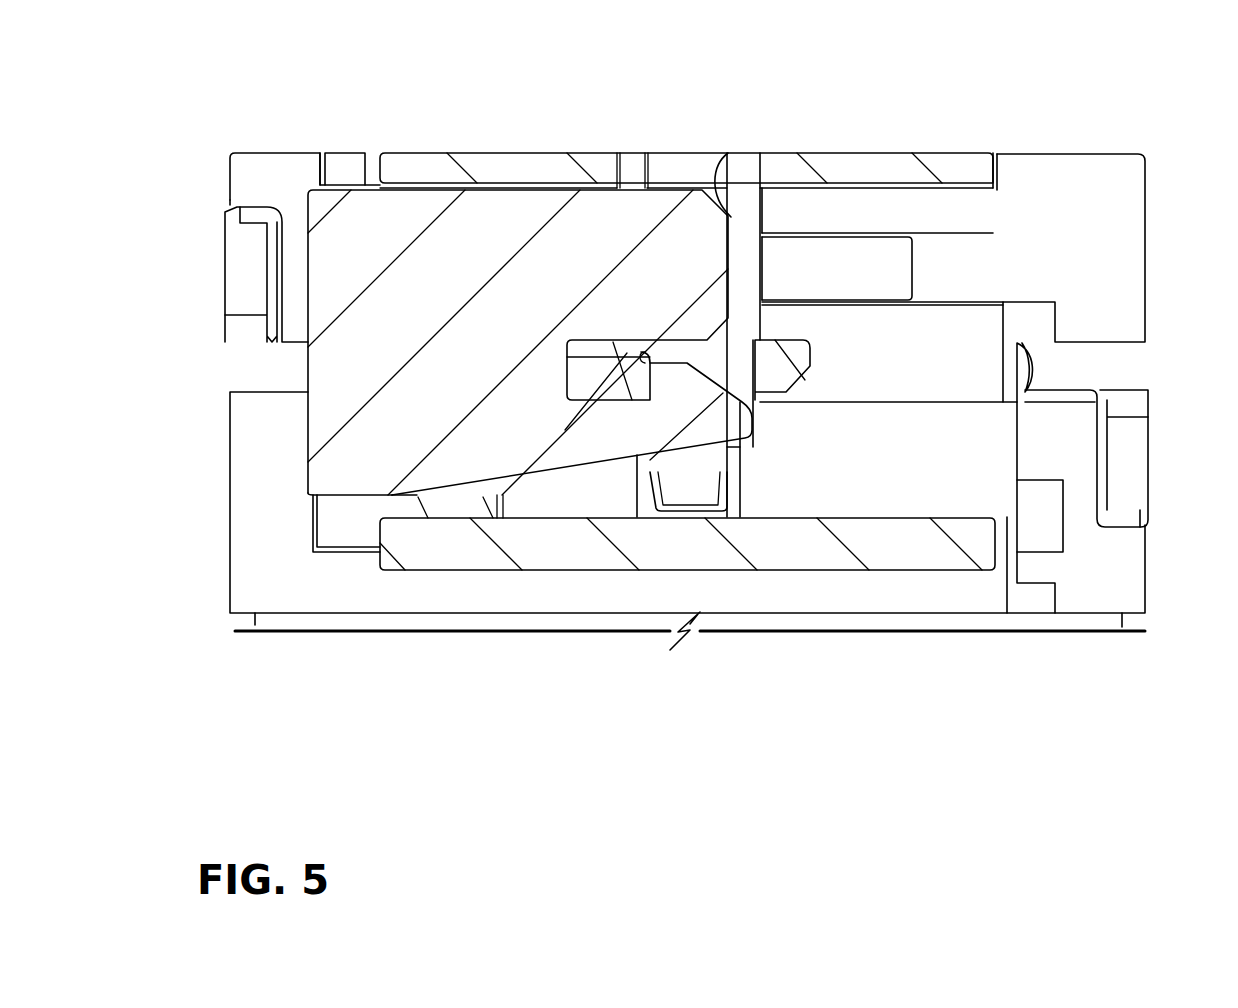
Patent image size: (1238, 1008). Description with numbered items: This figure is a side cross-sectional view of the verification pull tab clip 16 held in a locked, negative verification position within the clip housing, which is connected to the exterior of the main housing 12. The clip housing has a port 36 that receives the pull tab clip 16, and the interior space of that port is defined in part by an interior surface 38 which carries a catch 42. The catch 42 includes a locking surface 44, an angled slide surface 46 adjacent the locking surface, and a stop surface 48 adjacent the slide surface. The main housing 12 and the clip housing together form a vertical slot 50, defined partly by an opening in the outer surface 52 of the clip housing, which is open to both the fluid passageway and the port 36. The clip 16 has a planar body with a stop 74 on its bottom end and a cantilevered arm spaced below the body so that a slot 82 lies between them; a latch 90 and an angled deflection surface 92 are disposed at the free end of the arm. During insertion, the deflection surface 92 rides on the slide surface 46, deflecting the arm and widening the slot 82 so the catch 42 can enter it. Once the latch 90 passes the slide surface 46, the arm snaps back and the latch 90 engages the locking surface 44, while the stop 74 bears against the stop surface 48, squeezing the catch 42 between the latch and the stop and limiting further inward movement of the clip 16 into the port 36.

The main housing 12 is at (1148, 231).
The verification pull tab clip 16 is at (688, 188).
The port 36 is at (380, 518).
The interior surface 38 is at (585, 498).
The catch 42 is at (623, 340).
The locking surface 44 is at (650, 357).
The angled slide surface 46 is at (645, 390).
The stop surface 48 is at (585, 352).
The vertical slot 50 is at (720, 153).
The outer surface 52 is at (492, 150).
The stop 74 is at (562, 350).
The slot 82 is at (585, 375).
The latch 90 is at (672, 370).
The angled deflection surface 92 is at (703, 445).